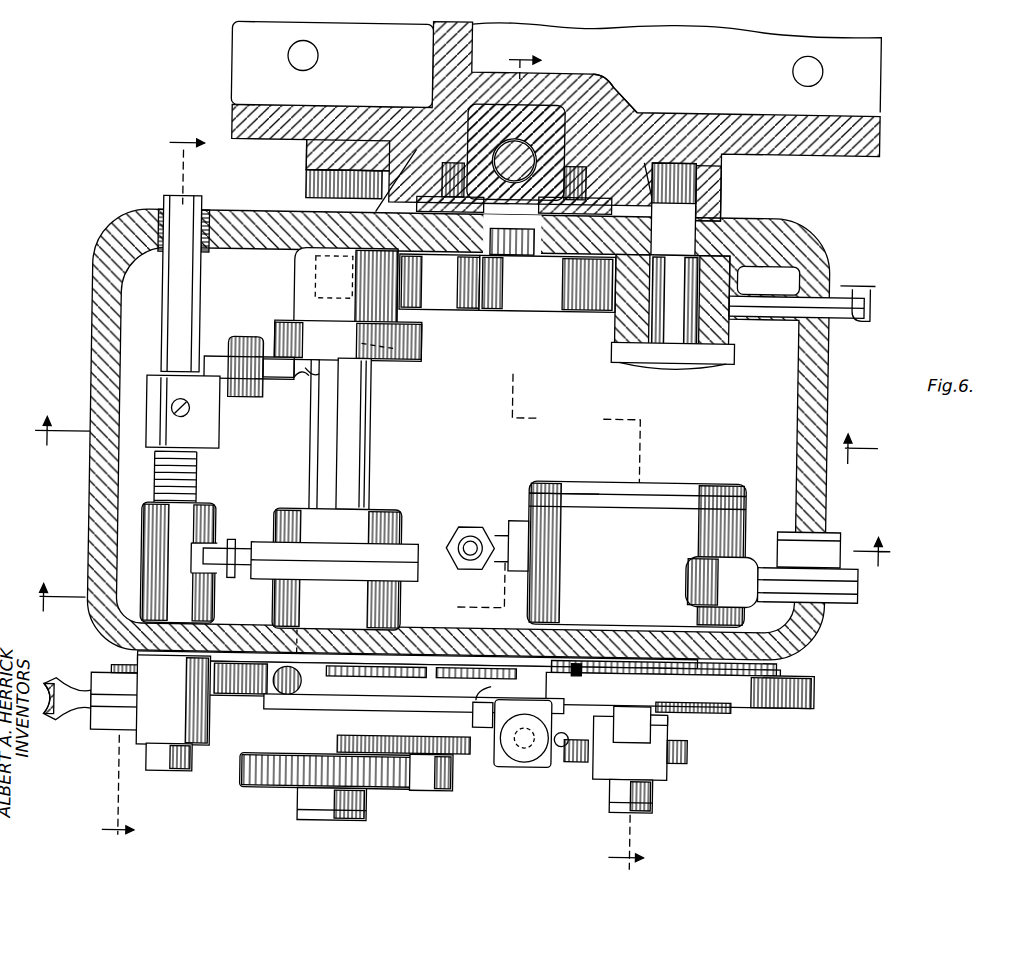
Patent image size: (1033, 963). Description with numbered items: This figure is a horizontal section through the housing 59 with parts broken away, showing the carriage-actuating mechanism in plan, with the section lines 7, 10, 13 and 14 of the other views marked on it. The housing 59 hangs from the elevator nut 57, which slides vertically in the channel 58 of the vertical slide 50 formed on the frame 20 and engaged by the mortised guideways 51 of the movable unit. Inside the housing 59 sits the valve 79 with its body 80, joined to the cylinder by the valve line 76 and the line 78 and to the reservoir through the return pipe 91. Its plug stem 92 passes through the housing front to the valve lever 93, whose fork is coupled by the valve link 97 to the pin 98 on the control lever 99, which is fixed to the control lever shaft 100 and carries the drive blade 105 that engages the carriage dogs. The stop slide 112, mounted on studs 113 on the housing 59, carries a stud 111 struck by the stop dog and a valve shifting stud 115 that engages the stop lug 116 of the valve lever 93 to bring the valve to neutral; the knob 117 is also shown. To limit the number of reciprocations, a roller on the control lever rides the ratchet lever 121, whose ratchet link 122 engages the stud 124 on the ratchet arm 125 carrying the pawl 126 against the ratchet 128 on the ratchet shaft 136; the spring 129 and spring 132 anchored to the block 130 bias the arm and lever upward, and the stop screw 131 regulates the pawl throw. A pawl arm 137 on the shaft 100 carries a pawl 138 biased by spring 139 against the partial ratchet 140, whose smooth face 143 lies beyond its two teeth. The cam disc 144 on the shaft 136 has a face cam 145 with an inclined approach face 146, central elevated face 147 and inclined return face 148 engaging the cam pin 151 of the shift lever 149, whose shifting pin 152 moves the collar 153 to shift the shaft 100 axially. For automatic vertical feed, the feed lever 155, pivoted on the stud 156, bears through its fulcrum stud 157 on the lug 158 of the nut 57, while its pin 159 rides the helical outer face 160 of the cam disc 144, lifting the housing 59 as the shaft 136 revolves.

The section line 7- 7 is at (460, 577).
The section line 10- 10 is at (453, 444).
The section line 13- 13 is at (150, 488).
The section line 14- 14 is at (575, 455).
The frame 20 is at (226, 90).
The vertical slide 50 is at (400, 175).
The mortised guideways 51 is at (302, 156).
The elevator nut 57 is at (600, 80).
The channel 58 is at (625, 103).
The housing 59 is at (818, 262).
The valve line 76 is at (472, 536).
The line 78 is at (835, 527).
The valve 79 is at (585, 478).
The valve body 80 is at (538, 492).
The return pipe 91 is at (840, 590).
The stem 92 is at (665, 718).
The valve lever 93 is at (672, 770).
The valve link 97 is at (583, 760).
The pin 98 is at (165, 775).
The control lever 99 is at (118, 735).
The control lever shaft 100 is at (198, 283).
The drive blade 105 is at (195, 730).
The stud 111 is at (290, 668).
The stop slide 112 is at (420, 660).
The studs 113 is at (330, 705).
The valve shifting stud 115 is at (700, 712).
The stop lug 116 is at (632, 724).
The knob 117 is at (75, 688).
The ratchet lever 121 is at (240, 680).
The ratchet link 122 is at (477, 712).
The stud 124 is at (485, 680).
The ratchet arm 125 is at (380, 730).
The pawl 126 is at (450, 790).
The ratchet 128 is at (400, 790).
The spring 129 is at (568, 732).
The block 130 is at (512, 766).
The stop screw 131 is at (532, 762).
The spring 132 is at (582, 660).
The ratchet shaft 136 is at (370, 432).
The pawl arm 137 is at (215, 507).
The pawl 138 is at (235, 552).
The spring 139 is at (234, 582).
The partial ratchet 140 is at (380, 511).
The smooth face 143 is at (385, 570).
The cam disc 144 is at (420, 358).
The face cam 145 is at (316, 392).
The inclined approach face 146 is at (355, 372).
The central elevated face 147 is at (318, 390).
The inclined return face 148 is at (300, 380).
The shift lever 149 is at (240, 340).
The cam pin 151 is at (275, 358).
The shifting pin 152 is at (203, 370).
The collar 153 is at (219, 440).
The feed lever 155 is at (560, 308).
The stud 156 is at (690, 345).
The fulcrum stud 157 is at (478, 268).
The lug 158 is at (493, 217).
The pin 159 is at (395, 318).
The outer face 160 is at (395, 350).